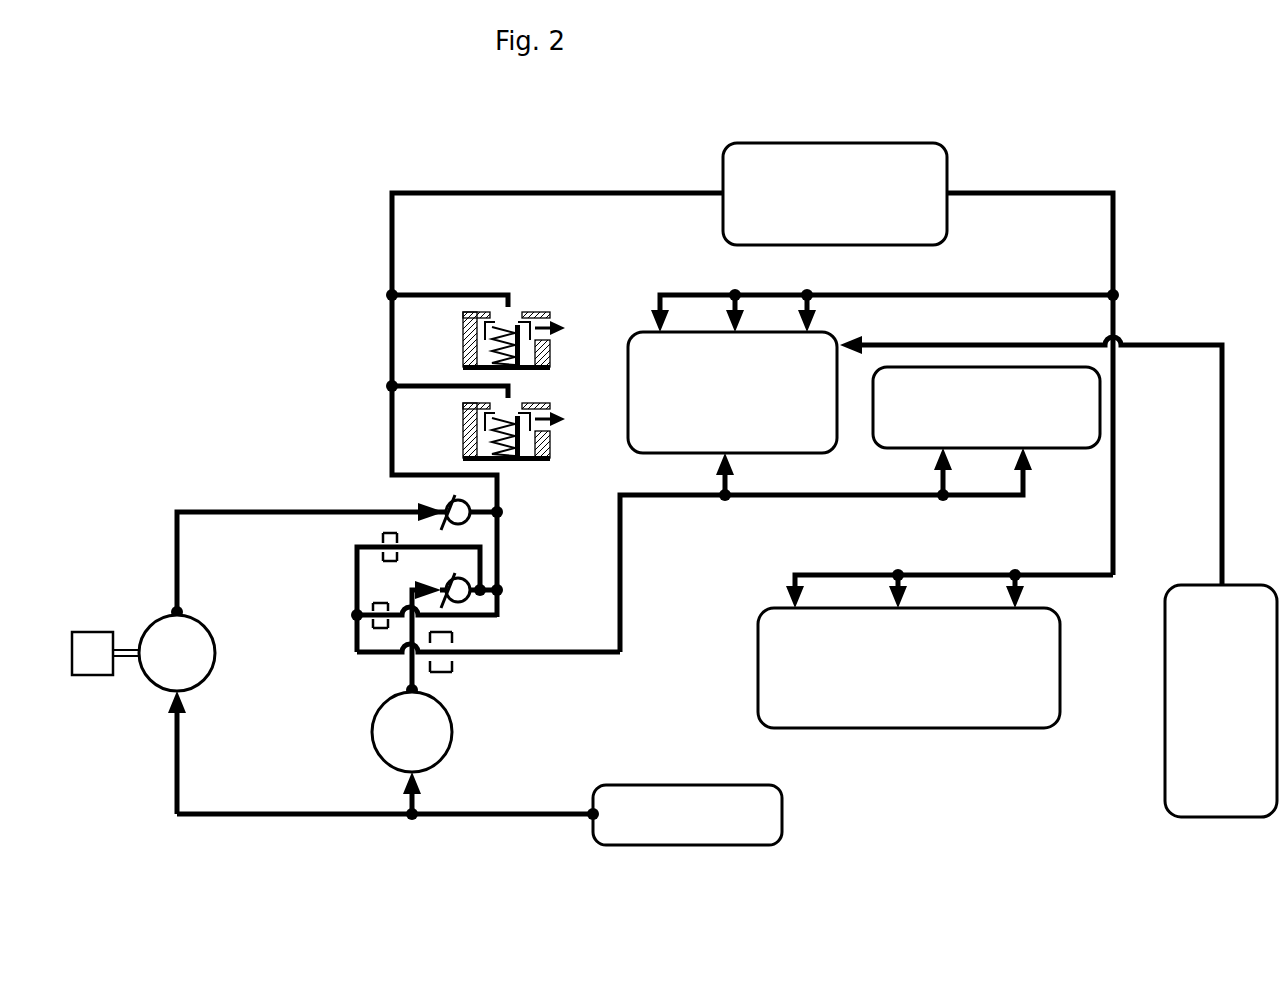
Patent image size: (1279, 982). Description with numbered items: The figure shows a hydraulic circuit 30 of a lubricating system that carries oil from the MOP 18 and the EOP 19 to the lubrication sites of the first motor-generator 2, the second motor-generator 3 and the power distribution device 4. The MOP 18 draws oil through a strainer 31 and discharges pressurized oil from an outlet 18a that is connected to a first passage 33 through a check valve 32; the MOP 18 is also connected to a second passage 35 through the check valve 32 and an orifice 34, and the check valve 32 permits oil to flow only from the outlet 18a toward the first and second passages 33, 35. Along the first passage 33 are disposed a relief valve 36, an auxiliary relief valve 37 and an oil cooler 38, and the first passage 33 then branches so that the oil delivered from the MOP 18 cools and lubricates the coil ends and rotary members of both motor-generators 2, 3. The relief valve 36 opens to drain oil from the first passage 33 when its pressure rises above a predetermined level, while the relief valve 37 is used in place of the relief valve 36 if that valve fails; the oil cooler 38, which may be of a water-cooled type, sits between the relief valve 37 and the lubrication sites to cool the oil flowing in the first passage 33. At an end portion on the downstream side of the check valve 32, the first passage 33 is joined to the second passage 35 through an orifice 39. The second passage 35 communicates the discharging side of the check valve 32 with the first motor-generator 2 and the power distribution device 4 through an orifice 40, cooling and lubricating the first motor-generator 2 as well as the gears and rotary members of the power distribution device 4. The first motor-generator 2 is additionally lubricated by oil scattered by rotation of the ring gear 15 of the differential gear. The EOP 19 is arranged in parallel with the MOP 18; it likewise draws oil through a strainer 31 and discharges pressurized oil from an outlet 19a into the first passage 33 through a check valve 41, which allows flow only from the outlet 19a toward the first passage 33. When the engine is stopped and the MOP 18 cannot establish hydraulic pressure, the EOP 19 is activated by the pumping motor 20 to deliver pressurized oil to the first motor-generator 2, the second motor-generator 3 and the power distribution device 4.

The first motor-generator 2 is at (628, 425).
The second motor-generator 3 is at (915, 730).
The power distribution device 4 is at (1058, 458).
The ring gear 15 is at (1222, 818).
The MOP 18 is at (372, 738).
The outlet 18a is at (405, 686).
The EOP 19 is at (158, 620).
The outlet 19a is at (179, 575).
The pumping motor 20 is at (92, 676).
The hydraulic circuit 30 is at (280, 226).
The strainer 31 is at (683, 848).
The check valve 32 is at (478, 600).
The first passage 33 is at (598, 190).
The orifice 34 is at (383, 537).
The second passage 35 is at (357, 592).
The relief valve 36 is at (562, 403).
The relief valve 37 is at (562, 305).
The oil cooler 38 is at (835, 141).
The orifice 39 is at (375, 626).
The orifice 40 is at (452, 668).
The check valve 41 is at (438, 500).